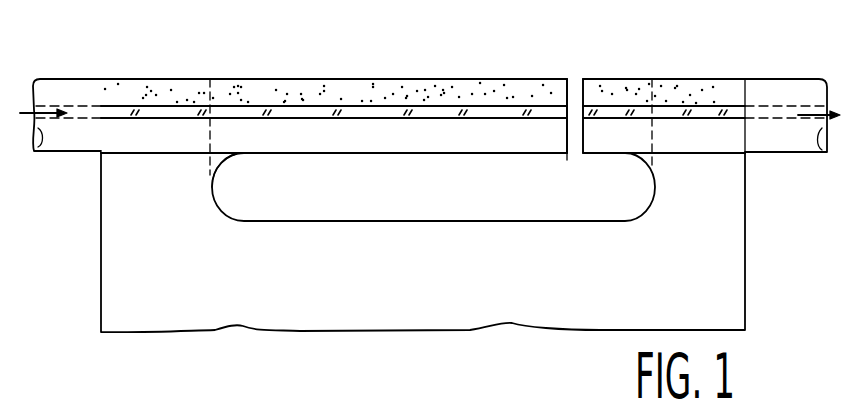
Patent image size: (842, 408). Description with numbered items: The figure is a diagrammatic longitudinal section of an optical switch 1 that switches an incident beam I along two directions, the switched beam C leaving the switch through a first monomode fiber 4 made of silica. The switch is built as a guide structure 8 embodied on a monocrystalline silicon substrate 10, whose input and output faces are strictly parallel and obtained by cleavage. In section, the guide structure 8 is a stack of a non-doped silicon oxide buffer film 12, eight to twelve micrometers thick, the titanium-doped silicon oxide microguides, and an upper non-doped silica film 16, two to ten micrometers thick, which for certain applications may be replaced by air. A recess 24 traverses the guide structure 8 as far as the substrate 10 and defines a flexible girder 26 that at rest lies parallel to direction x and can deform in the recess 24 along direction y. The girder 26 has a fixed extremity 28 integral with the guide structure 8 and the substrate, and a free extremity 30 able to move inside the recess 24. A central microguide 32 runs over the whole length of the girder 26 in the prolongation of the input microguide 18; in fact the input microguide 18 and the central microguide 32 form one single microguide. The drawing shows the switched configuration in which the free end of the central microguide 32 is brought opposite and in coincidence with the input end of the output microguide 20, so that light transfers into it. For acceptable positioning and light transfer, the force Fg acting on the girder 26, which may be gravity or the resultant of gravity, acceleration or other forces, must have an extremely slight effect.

The optical switch 1 is at (530, 22).
The first monomode fiber 4 is at (798, 43).
The guide structure 8 is at (430, 107).
The monocrystalline silicon substrate 10 is at (162, 228).
The non-doped silicon oxide buffer film 12 is at (152, 135).
The upper non-doped silica film 16 is at (230, 88).
The input microguide 18 is at (118, 118).
The output microguide 20 is at (618, 110).
The recess 24 is at (357, 220).
The flexible girder 26 is at (440, 30).
The fixed extremity 28 is at (242, 160).
The free extremity 30 is at (572, 79).
The central microguide 32 is at (282, 110).
The incident beam I is at (25, 118).
The switched beam C is at (833, 118).
The force acting on the girder Fg is at (566, 157).